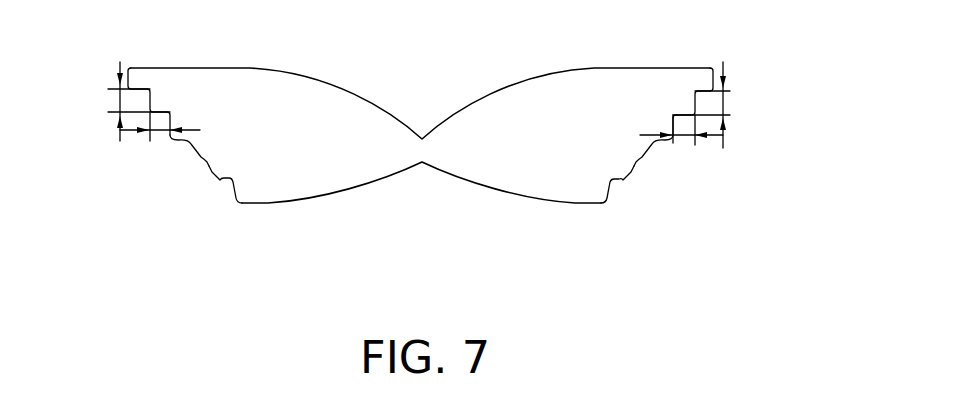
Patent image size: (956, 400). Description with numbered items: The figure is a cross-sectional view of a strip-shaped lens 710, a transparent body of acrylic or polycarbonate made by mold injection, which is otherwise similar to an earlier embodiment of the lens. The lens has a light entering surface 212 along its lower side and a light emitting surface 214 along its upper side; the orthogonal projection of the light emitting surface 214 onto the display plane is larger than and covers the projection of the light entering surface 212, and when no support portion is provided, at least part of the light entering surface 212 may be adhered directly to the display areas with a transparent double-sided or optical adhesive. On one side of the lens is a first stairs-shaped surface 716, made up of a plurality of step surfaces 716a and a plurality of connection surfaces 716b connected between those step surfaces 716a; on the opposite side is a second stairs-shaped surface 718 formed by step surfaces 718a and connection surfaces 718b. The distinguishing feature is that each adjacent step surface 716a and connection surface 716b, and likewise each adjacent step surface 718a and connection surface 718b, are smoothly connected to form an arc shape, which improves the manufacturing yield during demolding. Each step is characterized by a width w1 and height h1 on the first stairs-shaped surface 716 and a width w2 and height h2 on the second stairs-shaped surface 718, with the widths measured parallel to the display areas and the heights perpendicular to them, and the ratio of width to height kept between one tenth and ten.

The strip-shaped lens 710 is at (452, 150).
The light entering surface 212 is at (476, 184).
The light emitting surface 214 is at (467, 106).
The first stairs-shaped surface 716 is at (152, 183).
The step surfaces 716a is at (219, 184).
The connection surfaces 716b is at (199, 164).
The second stairs-shaped surface 718 is at (693, 185).
The step surfaces 718a is at (624, 186).
The connection surfaces 718b is at (662, 151).
The height of each step of the first stairs-shaped surface h1 is at (127, 101).
The height of each step of the second stairs-shaped surface h2 is at (719, 105).
The width of each step of the first stairs-shaped surface w1 is at (160, 140).
The width of each step of the second stairs-shaped surface w2 is at (681, 143).